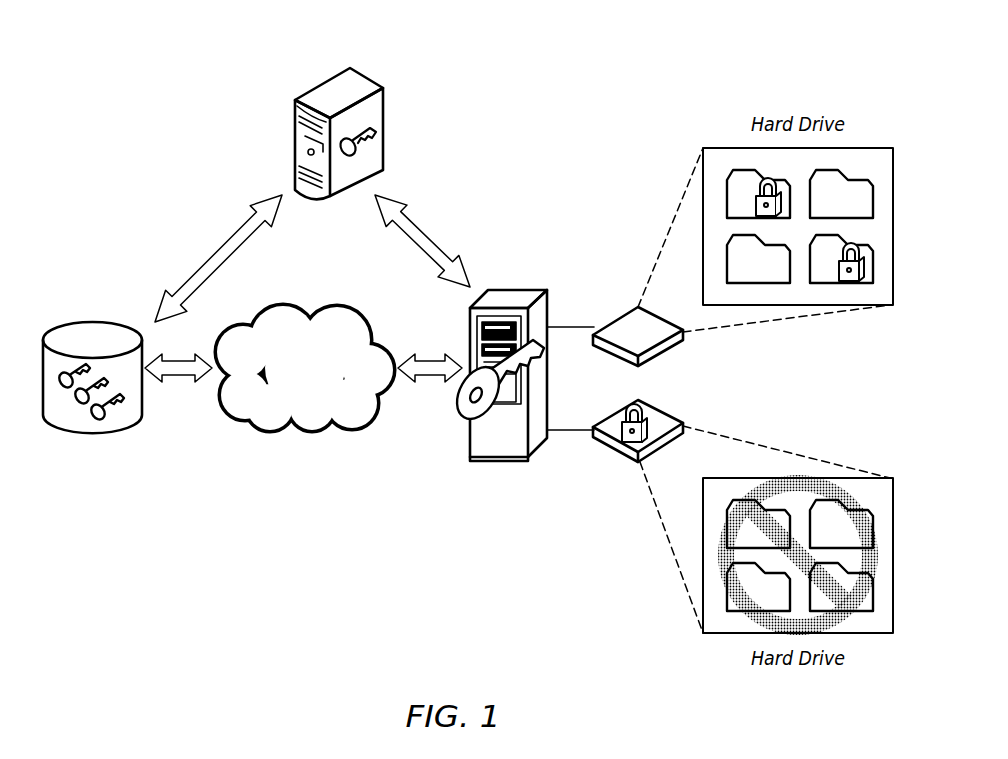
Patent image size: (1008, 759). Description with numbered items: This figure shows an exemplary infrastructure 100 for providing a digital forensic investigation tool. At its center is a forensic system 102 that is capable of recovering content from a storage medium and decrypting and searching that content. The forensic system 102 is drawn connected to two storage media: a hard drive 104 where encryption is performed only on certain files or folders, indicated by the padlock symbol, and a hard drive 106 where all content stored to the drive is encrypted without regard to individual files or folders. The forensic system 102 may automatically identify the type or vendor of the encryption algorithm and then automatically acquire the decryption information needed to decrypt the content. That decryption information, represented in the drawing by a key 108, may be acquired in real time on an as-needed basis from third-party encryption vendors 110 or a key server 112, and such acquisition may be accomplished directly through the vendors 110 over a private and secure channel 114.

The infrastructure 100 is at (640, 80).
The forensic system 102 is at (499, 290).
The hard drive 104 is at (630, 305).
The hard drive 106 is at (628, 462).
The decryption key 108 is at (462, 419).
The encryption vendors 110 is at (294, 116).
The key server 112 is at (92, 320).
The private and secure channel 114 is at (318, 314).